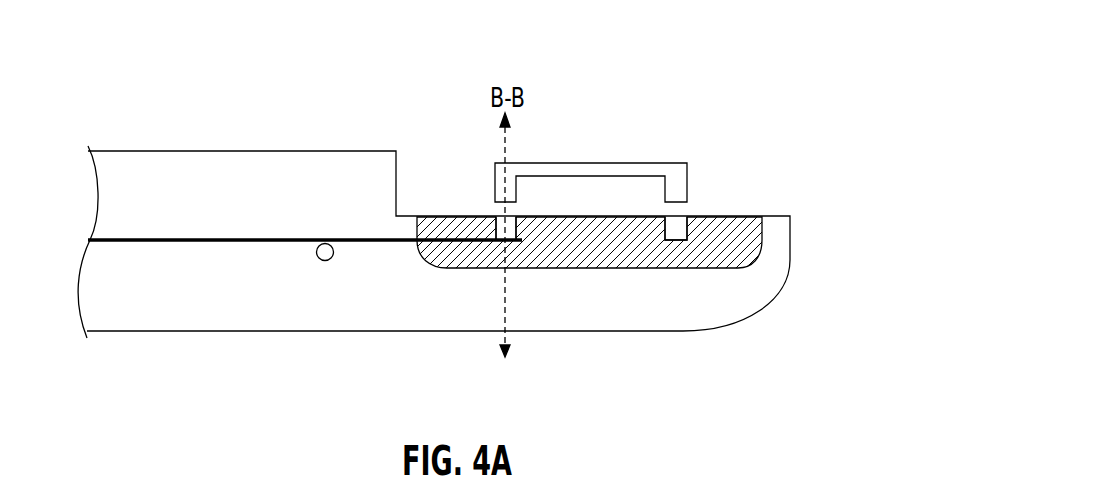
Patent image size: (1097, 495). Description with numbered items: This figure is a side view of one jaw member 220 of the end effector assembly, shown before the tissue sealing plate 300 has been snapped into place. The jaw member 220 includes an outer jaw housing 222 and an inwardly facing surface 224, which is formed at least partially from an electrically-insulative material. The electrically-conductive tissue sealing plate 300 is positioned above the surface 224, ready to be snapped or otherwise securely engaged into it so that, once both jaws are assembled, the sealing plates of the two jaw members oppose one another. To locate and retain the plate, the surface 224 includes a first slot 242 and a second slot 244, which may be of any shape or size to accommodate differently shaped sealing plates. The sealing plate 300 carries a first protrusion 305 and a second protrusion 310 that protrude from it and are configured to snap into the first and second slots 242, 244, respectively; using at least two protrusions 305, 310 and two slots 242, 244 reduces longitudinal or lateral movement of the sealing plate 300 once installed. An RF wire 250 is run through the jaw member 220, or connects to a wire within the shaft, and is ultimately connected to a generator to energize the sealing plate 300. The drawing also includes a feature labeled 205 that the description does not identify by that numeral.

The jaw member 220 is at (699, 71).
The outer jaw housing 222 is at (613, 331).
The inwardly facing surface 224 is at (738, 247).
The optical fiber core / light path point 205 is at (325, 240).
The RF wire 250 is at (363, 243).
The tissue sealing plate 300 is at (613, 163).
The first protrusion 305 is at (495, 202).
The second protrusion 310 is at (687, 202).
The first slot 242 is at (510, 222).
The second slot 244 is at (672, 222).